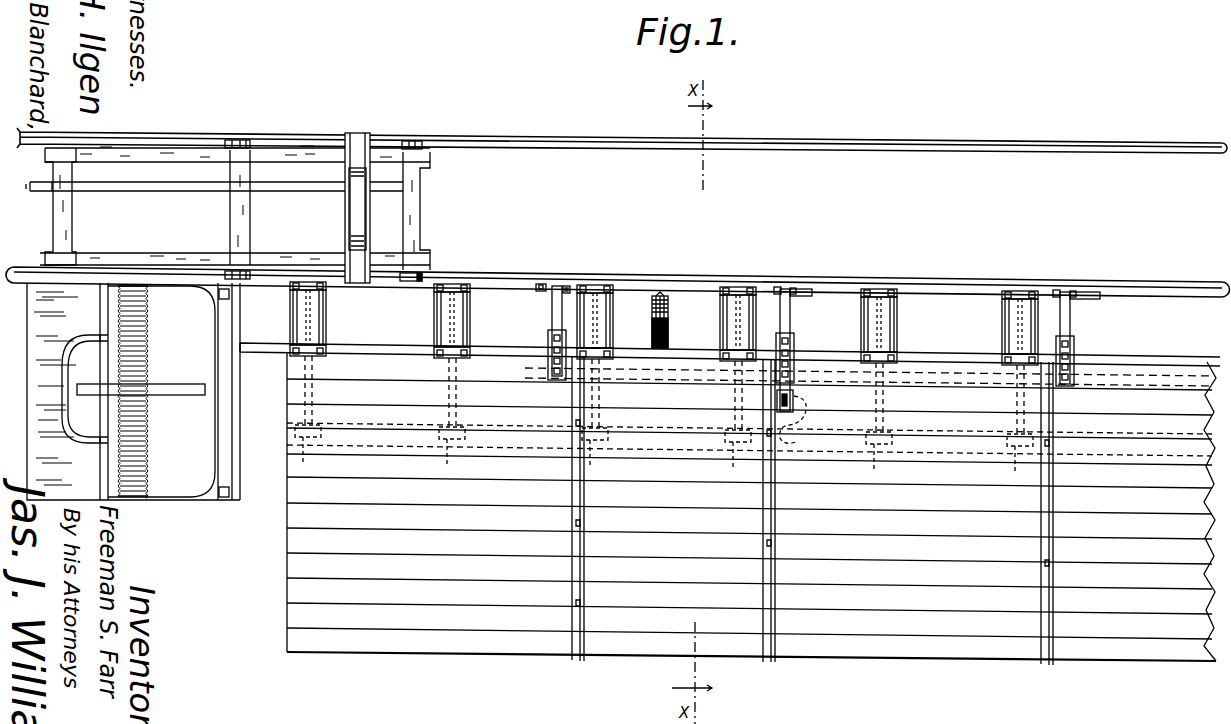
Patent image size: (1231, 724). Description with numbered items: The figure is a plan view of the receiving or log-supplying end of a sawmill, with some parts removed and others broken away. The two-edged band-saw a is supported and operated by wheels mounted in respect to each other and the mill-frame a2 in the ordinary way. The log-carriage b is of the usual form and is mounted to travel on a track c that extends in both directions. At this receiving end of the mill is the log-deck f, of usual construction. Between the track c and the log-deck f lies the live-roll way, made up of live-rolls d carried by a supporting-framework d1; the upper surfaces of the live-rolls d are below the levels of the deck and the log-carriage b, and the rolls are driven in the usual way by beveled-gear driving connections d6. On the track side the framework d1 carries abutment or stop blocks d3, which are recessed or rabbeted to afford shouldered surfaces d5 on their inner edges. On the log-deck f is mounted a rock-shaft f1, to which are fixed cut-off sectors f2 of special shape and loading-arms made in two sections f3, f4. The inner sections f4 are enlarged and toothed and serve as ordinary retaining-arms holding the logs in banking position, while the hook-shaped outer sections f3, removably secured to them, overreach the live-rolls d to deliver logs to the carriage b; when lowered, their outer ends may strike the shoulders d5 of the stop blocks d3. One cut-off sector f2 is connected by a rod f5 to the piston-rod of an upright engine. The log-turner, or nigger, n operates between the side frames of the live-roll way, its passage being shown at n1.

The two-edged band-saw a is at (140, 357).
The mill-frame a2 is at (218, 296).
The log-carriage b is at (246, 218).
The track c is at (588, 153).
The live-rolls d is at (327, 333).
The supporting-framework d1 is at (430, 287).
The abutment or stop block d3 is at (544, 285).
The shouldered surface d5 is at (585, 286).
The beveled-gear driving connections d6 is at (1028, 480).
The log-deck f is at (751, 509).
The rock-shaft f1 is at (1118, 366).
The cut-off sector f2 is at (795, 406).
The outer section of loading-arm f3 is at (1082, 313).
The inner section of loading-arm f4 is at (1089, 339).
The rod f5 is at (797, 422).
The pawl n is at (680, 301).
The passage for log-turner n1 is at (672, 326).